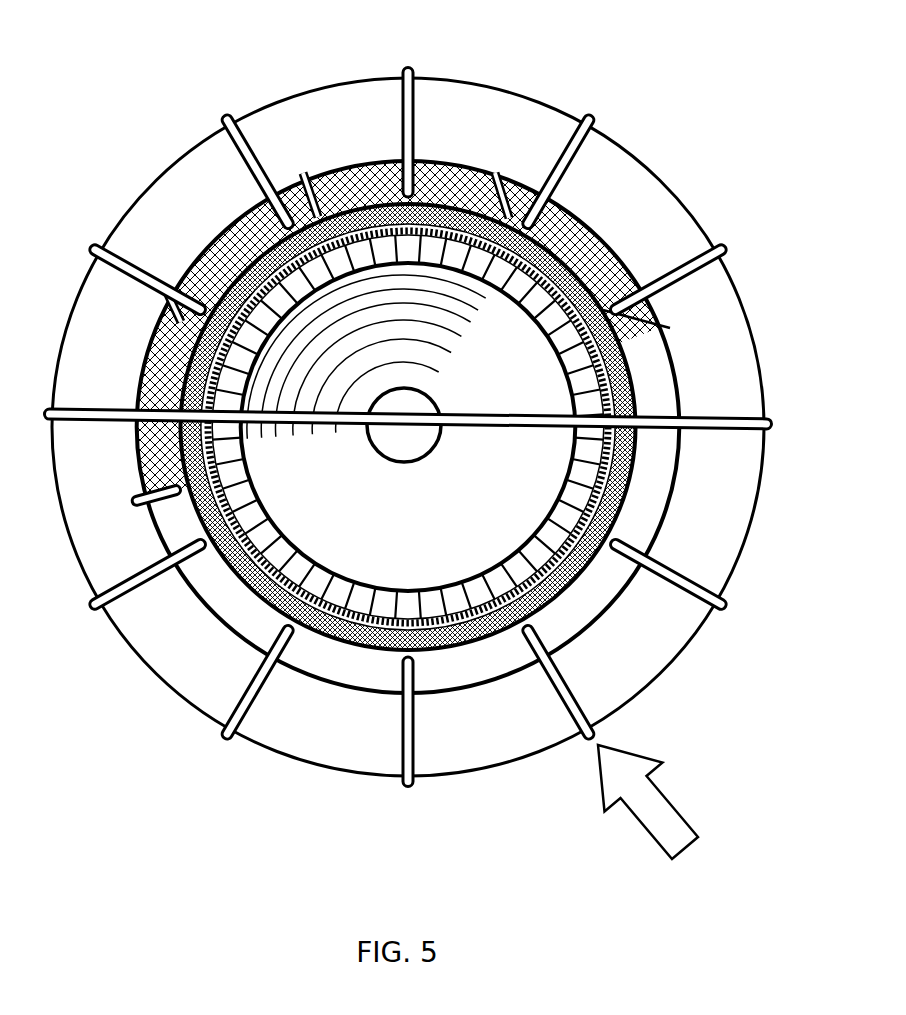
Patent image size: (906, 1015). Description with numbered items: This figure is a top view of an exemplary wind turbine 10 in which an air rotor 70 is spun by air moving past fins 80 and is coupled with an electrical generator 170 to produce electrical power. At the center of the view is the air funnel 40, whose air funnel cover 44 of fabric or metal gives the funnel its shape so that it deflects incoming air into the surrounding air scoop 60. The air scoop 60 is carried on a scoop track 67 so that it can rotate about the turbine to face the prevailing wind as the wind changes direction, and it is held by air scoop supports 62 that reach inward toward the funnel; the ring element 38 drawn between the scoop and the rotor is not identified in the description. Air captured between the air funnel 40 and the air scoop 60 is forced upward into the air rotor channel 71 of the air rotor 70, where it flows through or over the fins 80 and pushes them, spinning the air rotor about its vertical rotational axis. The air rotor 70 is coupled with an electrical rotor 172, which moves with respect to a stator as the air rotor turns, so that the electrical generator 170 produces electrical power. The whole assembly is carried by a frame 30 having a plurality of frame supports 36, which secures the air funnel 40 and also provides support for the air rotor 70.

The wind turbine 10 is at (183, 133).
The frame 30 is at (112, 230).
The frame supports 36 is at (234, 110).
The stator core 38 is at (463, 213).
The air funnel 40 is at (497, 377).
The air funnel cover 44 is at (487, 444).
The air scoop 60 is at (384, 180).
The air scoop supports 62 is at (310, 177).
The scoop track 67 is at (342, 172).
The air rotor 70 is at (522, 183).
The air rotor channel 71 is at (492, 173).
The fins 80 is at (623, 367).
The electrical generator 170 is at (633, 272).
The electrical rotor 172 is at (652, 292).